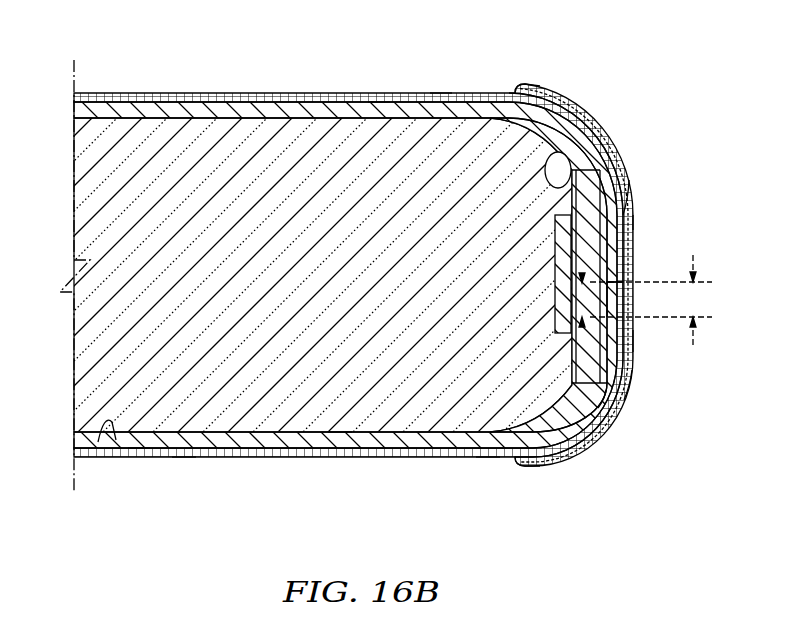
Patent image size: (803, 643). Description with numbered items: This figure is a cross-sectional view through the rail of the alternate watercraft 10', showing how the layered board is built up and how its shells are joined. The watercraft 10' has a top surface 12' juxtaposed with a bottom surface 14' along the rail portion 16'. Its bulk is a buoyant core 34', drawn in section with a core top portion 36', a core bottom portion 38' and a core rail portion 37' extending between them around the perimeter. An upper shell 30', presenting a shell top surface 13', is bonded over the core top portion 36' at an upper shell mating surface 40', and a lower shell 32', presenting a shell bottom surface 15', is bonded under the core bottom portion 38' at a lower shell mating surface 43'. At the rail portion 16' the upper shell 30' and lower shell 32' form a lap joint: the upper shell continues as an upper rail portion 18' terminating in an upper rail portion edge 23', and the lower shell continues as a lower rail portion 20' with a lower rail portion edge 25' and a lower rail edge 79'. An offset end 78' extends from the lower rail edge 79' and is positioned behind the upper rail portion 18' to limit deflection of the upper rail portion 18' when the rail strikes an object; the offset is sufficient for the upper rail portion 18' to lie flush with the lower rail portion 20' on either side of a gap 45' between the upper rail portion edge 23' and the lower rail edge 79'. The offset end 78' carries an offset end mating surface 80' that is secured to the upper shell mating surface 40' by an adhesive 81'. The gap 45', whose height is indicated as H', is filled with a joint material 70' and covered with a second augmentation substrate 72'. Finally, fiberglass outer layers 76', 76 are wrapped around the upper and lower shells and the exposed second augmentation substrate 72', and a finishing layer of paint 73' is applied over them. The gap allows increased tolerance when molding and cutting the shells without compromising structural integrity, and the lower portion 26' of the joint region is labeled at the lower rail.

The watercraft 10' is at (401, 257).
The top surface 12' is at (436, 71).
The shell top surface 13' is at (502, 68).
The bottom surface 14' is at (188, 485).
The shell bottom surface 15' is at (144, 480).
The rail portion 16' is at (671, 191).
The upper rail portion 18' is at (561, 270).
The lower rail portion 20' is at (618, 439).
The upper rail portion edge 23' is at (639, 276).
The lower rail portion edge 25' is at (612, 268).
The lower edge portion 26' is at (675, 420).
The upper shell 30' is at (401, 168).
The lower shell 32' is at (400, 391).
The core 34' is at (492, 485).
The core top portion 36' is at (401, 248).
The core rail portion 37' is at (591, 96).
The core bottom portion 38' is at (345, 472).
The upper shell mating surface 40' is at (372, 74).
The lower shell mating surface 43' is at (107, 466).
The gap 45' is at (675, 372).
The joint material 70' is at (647, 300).
The second augmentation substrate 72' is at (480, 275).
The paint 73' is at (578, 274).
The fiberglass outer layer 76' is at (348, 159).
The fiberglass outer layer 76 is at (348, 397).
The offset end 78' is at (538, 292).
The lower rail edge 79' is at (533, 485).
The offset end mating surface 80' is at (538, 247).
The adhesive 81' is at (660, 165).
The edge height H' is at (651, 284).